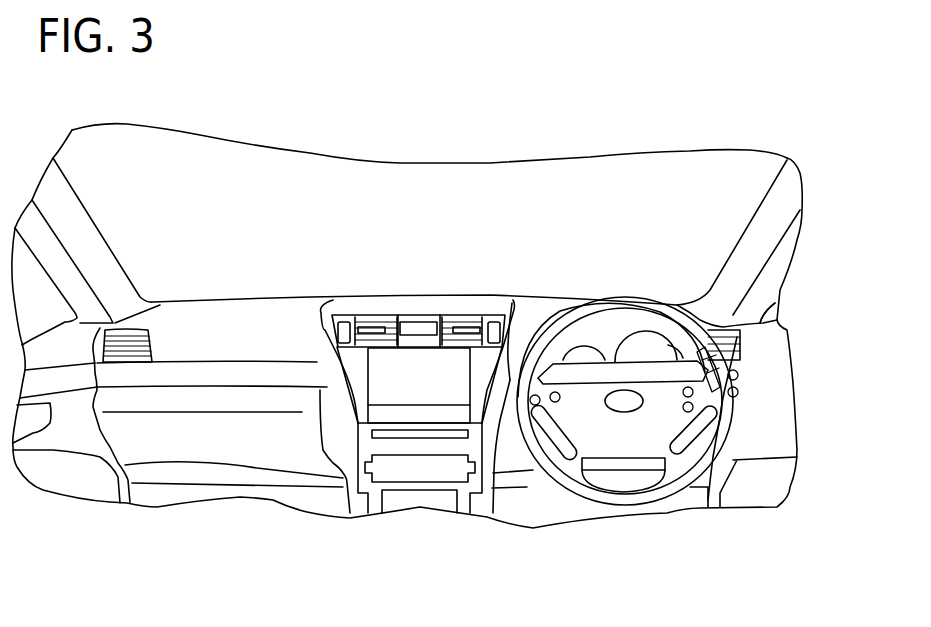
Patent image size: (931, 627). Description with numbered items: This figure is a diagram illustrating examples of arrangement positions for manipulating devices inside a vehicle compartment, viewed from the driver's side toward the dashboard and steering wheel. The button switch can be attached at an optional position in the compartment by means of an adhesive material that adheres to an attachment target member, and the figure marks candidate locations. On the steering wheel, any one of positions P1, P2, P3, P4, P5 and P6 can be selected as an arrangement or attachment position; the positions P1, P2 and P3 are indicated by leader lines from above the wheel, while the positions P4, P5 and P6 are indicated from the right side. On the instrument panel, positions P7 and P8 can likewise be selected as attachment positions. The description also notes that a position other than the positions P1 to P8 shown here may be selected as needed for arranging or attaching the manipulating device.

The position P1 is at (524, 395).
The position P2 is at (557, 392).
The position P3 is at (685, 386).
The position P4 is at (694, 408).
The position P5 is at (778, 322).
The position P6 is at (737, 350).
The position P7 is at (738, 376).
The position P8 is at (738, 392).